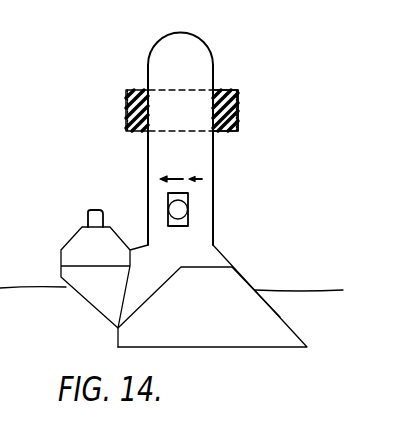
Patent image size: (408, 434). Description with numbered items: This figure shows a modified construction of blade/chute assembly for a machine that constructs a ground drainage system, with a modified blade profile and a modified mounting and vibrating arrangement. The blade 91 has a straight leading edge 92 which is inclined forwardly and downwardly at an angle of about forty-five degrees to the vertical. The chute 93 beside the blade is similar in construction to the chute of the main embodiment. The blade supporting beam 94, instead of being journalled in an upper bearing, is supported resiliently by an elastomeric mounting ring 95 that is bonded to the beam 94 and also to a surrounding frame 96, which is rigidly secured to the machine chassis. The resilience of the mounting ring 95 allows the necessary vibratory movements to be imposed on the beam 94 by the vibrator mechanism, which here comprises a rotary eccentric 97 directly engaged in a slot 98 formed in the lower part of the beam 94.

The blade 91 is at (197, 328).
The straight leading edge 92 is at (280, 317).
The chute 93 is at (97, 287).
The blade supporting beam 94 is at (147, 162).
The elastomeric mounting ring 95 is at (226, 90).
The surrounding frame 96 is at (238, 110).
The rotary eccentric 97 is at (180, 210).
The slot 98 is at (168, 198).